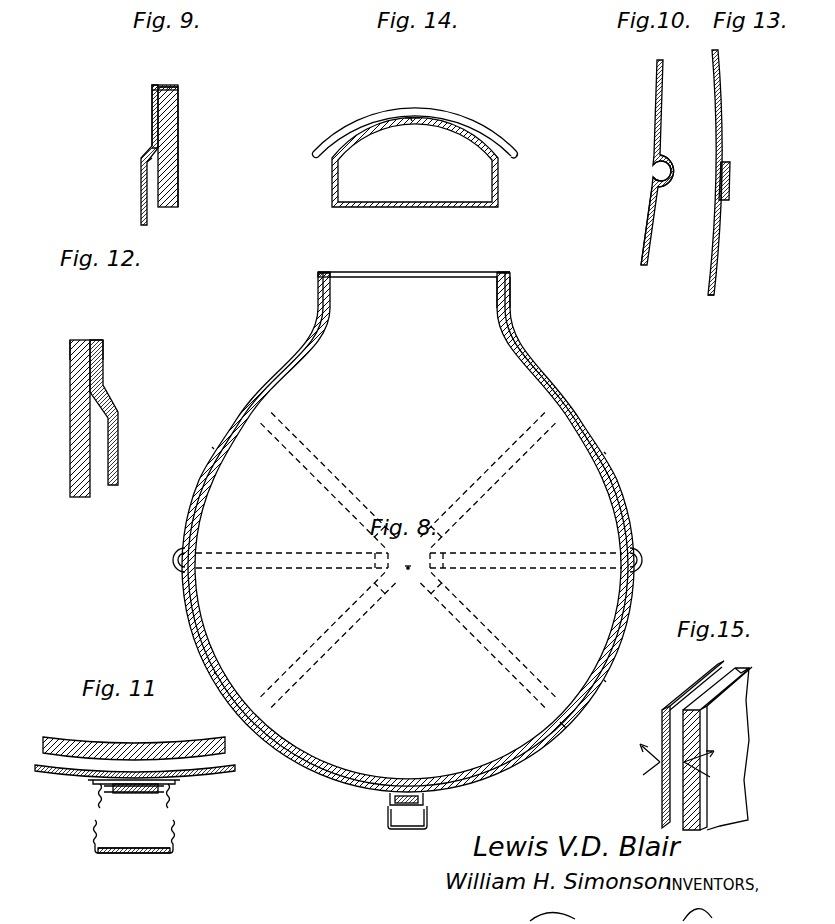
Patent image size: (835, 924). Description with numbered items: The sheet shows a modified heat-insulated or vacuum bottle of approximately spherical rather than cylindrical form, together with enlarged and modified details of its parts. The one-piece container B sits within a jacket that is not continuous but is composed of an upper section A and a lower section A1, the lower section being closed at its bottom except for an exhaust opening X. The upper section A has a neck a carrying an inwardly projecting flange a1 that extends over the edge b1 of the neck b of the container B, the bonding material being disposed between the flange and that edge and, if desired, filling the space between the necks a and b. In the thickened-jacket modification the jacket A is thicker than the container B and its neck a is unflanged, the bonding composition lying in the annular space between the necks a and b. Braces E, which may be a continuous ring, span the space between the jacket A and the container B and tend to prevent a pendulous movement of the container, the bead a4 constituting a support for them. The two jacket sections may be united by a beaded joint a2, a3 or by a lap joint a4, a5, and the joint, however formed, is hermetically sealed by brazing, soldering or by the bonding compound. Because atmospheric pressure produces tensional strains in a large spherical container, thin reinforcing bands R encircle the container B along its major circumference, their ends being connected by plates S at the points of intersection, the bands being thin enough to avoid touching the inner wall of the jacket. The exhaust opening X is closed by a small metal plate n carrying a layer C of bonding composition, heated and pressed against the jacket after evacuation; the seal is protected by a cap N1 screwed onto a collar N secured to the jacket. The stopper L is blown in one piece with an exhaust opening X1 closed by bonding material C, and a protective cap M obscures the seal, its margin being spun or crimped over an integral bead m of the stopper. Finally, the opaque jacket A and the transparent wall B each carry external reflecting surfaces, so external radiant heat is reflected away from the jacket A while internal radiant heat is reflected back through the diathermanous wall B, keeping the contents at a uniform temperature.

In FIG. 9, the upper section of the jacket A is at (141, 198).
In FIG. 10, the upper section of the jacket A is at (663, 110).
In FIG. 13, the upper section of the jacket A is at (722, 110).
In FIG. 12, the upper section of the jacket A is at (70, 465).
In FIG. 8, the upper section of the jacket A is at (606, 440).
In FIG. 15, the upper section of the jacket A is at (662, 802).
In FIG. 10, the lower section of the jacket A1 is at (648, 232).
In FIG. 13, the lower section of the jacket A1 is at (722, 232).
In FIG. 8, the lower section of the jacket A1 is at (560, 722).
In FIG. 11, the lower section of the jacket A1 is at (205, 776).
In FIG. 9, the container B is at (178, 198).
In FIG. 12, the container B is at (118, 465).
In FIG. 8, the container B is at (626, 530).
In FIG. 11, the container B is at (136, 742).
In FIG. 15, the container B is at (705, 802).
In FIG. 9, the layer of bonding composition C is at (178, 90).
In FIG. 14, the layer of bonding composition C is at (418, 120).
In FIG. 12, the layer of bonding composition C is at (93, 340).
In FIG. 8, the layer of bonding composition C is at (503, 275).
In FIG. 11, the layer of bonding composition C is at (150, 794).
In FIG. 8, the braces E is at (212, 447).
In FIG. 9, the neck of the jacket a is at (152, 125).
In FIG. 12, the neck of the jacket a is at (70, 360).
In FIG. 8, the neck of the jacket a is at (510, 300).
In FIG. 9, the neck of the container b is at (178, 125).
In FIG. 12, the neck of the container b is at (103, 360).
In FIG. 8, the neck of the container b is at (497, 300).
In FIG. 9, the inwardly projecting flange a1 is at (163, 85).
In FIG. 8, the inwardly projecting flange a1 is at (321, 272).
In FIG. 9, the edge of the neck of the container b1 is at (181, 87).
In FIG. 8, the edge of the neck of the container b1 is at (335, 277).
In FIG. 10, the beaded joint a2 is at (656, 172).
In FIG. 8, the beaded joint a2 is at (642, 579).
In FIG. 10, the beaded joint a3 is at (672, 165).
In FIG. 8, the beaded joint a3 is at (646, 556).
In FIG. 13, the lap joint a4 is at (719, 182).
In FIG. 13, the lap joint a5 is at (730, 181).
In FIG. 14, the stopper L is at (415, 162).
In FIG. 14, the protective cap M is at (487, 127).
In FIG. 14, the integral bead m is at (514, 153).
In FIG. 11, the exhaust opening X is at (165, 778).
In FIG. 14, the exhaust opening of the stopper X1 is at (427, 117).
In FIG. 8, the collar N is at (388, 799).
In FIG. 11, the collar N is at (98, 796).
In FIG. 8, the metal plate n is at (395, 806).
In FIG. 11, the metal plate n is at (128, 796).
In FIG. 8, the cap N1 is at (407, 829).
In FIG. 11, the cap N1 is at (130, 853).
In FIG. 8, the bands R is at (486, 636).
In FIG. 8, the plates S is at (408, 573).